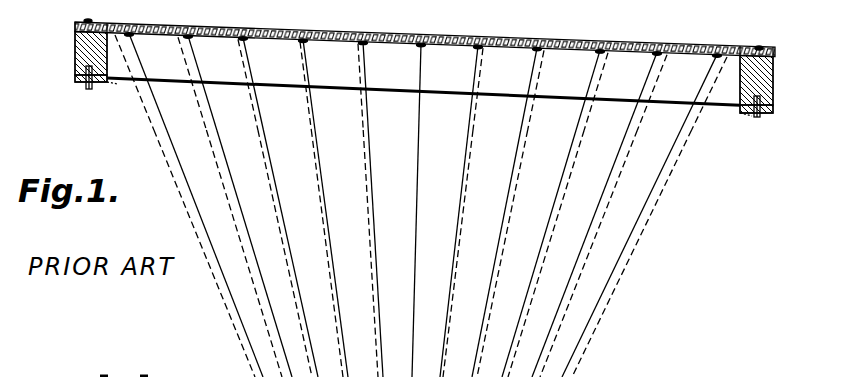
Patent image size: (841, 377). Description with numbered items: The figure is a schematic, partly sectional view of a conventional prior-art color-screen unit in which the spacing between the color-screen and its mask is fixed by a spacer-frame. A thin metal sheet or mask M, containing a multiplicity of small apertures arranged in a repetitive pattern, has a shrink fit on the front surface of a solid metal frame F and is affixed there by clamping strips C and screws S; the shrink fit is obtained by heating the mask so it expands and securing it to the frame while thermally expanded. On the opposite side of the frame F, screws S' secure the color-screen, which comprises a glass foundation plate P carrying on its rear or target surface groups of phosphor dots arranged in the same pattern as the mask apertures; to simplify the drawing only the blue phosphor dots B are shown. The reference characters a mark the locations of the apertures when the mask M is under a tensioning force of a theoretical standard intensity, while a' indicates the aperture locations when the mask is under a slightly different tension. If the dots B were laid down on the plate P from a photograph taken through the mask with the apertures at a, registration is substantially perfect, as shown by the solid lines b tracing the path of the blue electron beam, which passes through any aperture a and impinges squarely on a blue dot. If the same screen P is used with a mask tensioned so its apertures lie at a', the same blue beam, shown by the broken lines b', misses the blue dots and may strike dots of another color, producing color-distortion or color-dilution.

The glass foundation plate P is at (354, 32).
The solid metal frame F is at (75, 48).
The mask M is at (340, 87).
The screws S is at (410, 106).
The screws S' is at (425, 28).
The clamping strips C is at (124, 88).
The blue phosphor dots B is at (190, 38).
The apertures a is at (423, 81).
The apertures a' is at (419, 85).
The electron beam b is at (424, 253).
The electron beam b' is at (423, 253).